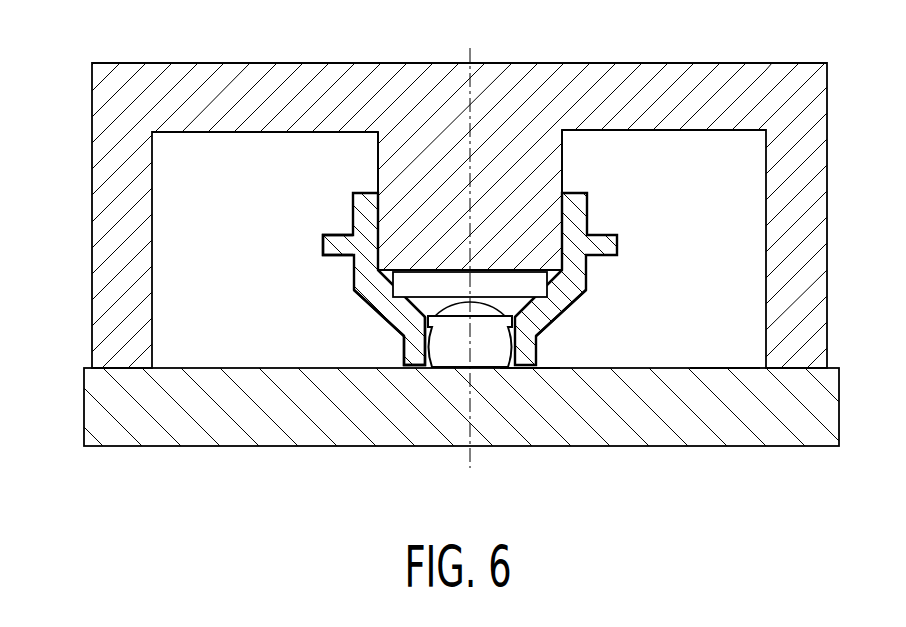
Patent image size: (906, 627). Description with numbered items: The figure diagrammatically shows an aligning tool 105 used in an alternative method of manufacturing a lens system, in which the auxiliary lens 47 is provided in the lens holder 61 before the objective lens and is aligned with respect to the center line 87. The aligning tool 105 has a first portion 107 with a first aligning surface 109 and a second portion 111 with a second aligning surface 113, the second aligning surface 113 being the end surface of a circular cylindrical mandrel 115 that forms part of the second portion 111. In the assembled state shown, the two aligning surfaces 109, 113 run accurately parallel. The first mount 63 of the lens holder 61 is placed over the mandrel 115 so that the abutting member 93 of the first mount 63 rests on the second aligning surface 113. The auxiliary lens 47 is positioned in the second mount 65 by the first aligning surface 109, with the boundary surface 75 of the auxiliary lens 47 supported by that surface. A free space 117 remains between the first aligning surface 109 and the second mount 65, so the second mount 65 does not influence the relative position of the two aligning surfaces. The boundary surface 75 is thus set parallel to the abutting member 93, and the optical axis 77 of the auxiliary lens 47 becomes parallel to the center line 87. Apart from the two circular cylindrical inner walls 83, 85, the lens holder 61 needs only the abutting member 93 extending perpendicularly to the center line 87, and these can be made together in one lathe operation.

The aligning tool 105 is at (432, 279).
The second portion 111 is at (736, 87).
The second aligning surface 113 is at (511, 262).
The circular cylindrical mandrel 115 is at (378, 165).
The first portion 107 is at (280, 410).
The first aligning surface 109 is at (712, 367).
The free space 117 is at (528, 368).
The first mount 63 is at (366, 223).
The lens holder 61 is at (373, 273).
The abutting member 93 is at (380, 287).
The second mount 65 is at (415, 350).
The circular cylindrical inner wall 83 is at (567, 205).
The circular cylindrical inner wall 85 is at (543, 327).
The center line 87 is at (548, 277).
The auxiliary lens 47 is at (497, 360).
The boundary surface 75 is at (470, 329).
The optical axis 77 is at (470, 340).